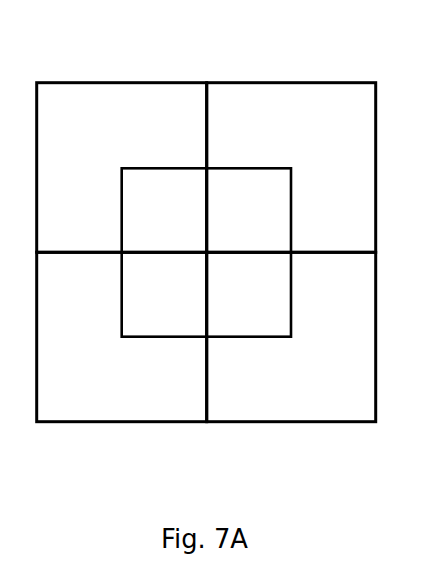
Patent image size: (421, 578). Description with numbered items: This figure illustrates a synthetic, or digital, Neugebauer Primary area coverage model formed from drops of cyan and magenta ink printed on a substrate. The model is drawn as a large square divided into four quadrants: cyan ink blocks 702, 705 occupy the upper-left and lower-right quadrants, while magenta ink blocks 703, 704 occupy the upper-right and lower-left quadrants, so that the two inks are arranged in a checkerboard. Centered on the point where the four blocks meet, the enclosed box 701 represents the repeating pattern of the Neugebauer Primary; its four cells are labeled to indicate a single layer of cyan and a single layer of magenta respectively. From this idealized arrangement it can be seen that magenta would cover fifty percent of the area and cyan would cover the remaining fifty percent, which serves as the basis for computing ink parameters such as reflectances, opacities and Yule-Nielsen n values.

The enclosed box 701 is at (270, 337).
The cyan ink block 702 is at (67, 102).
The magenta ink block 703 is at (348, 102).
The magenta ink block 704 is at (67, 402).
The cyan ink block 705 is at (346, 402).